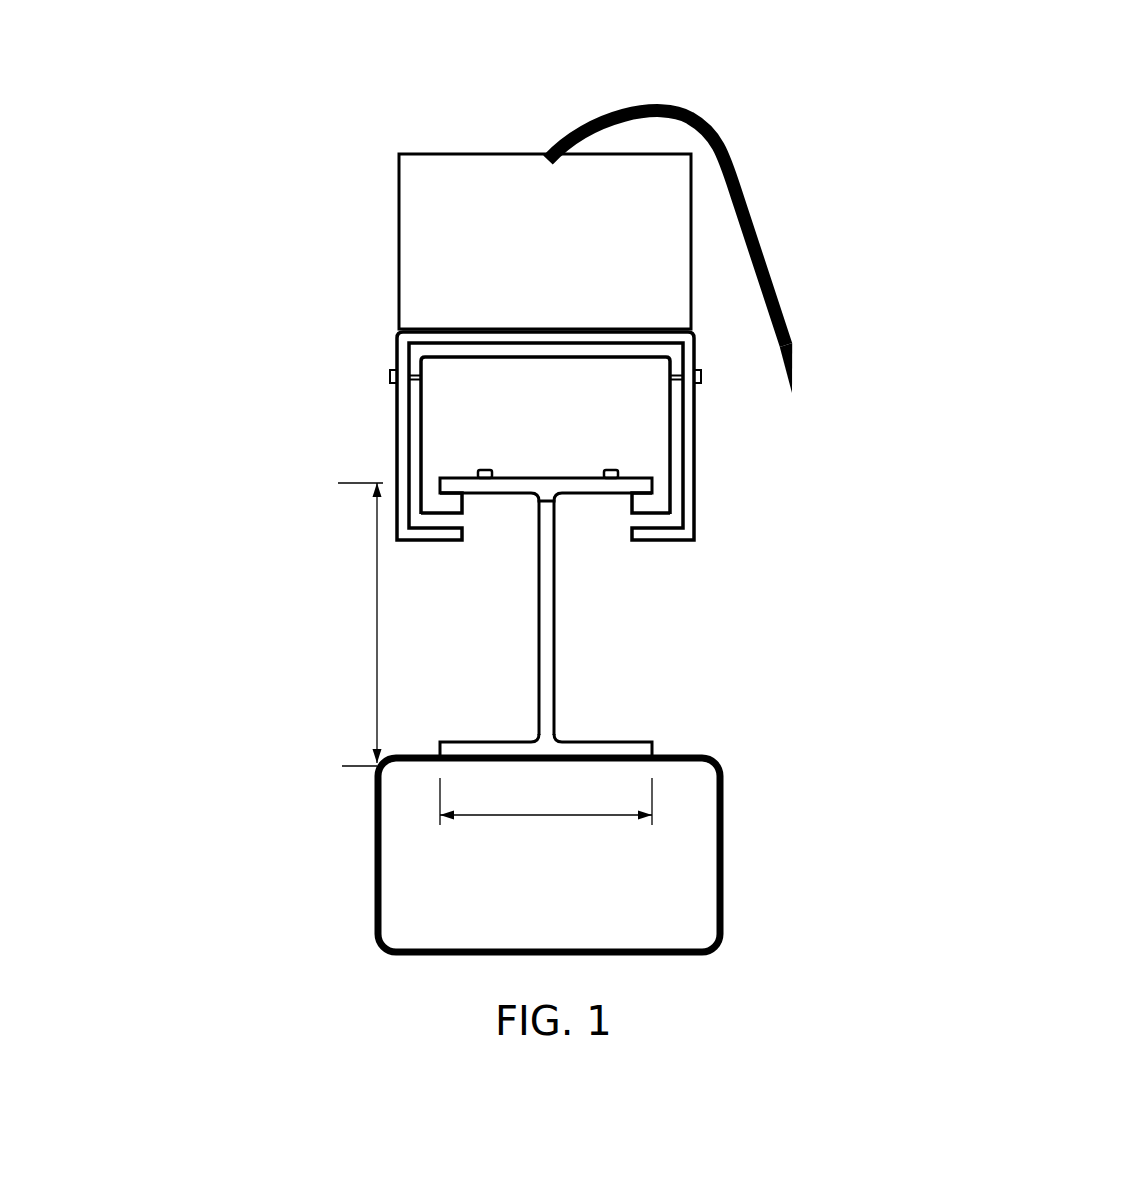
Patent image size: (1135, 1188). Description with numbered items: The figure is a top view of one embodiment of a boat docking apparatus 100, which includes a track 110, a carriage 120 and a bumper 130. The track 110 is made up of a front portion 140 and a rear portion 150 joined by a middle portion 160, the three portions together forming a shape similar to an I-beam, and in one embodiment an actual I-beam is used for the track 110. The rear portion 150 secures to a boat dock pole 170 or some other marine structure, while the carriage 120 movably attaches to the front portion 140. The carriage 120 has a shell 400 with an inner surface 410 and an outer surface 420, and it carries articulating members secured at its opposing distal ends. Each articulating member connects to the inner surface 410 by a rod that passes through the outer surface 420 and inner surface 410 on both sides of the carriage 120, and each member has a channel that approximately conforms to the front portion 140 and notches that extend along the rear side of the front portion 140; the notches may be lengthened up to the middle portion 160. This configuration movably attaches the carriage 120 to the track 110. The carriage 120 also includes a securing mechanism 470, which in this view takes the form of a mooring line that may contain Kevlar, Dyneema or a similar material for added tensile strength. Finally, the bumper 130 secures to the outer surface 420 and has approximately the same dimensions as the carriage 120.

The apparatus 100 is at (224, 236).
The track 110 is at (460, 653).
The carriage 120 is at (340, 445).
The bumper 130 is at (452, 228).
The front portion 140 is at (557, 495).
The rear portion 150 is at (563, 747).
The middle portion 160 is at (544, 600).
The boat dock pole 170 is at (683, 860).
The shell 400 is at (687, 433).
The inner surface 410 is at (408, 434).
The outer surface 420 is at (397, 348).
The securing mechanism 470 is at (745, 182).